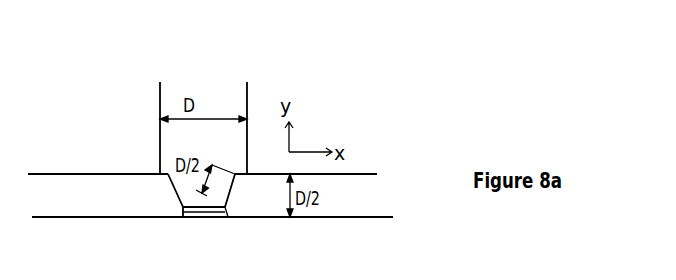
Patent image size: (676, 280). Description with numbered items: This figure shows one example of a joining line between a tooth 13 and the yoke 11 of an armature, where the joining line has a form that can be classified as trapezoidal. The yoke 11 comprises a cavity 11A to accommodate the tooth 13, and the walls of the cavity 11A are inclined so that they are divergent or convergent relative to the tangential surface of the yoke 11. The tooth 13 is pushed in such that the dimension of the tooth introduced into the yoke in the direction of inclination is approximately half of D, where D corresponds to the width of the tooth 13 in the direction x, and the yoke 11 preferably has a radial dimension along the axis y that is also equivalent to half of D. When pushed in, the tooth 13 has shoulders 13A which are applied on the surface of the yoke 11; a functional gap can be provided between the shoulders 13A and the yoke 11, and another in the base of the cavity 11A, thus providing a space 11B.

The yoke 11 is at (258, 207).
The cavity 11A is at (228, 217).
The space 11B is at (183, 217).
The tooth 13 is at (235, 103).
The shoulder 13A is at (148, 174).